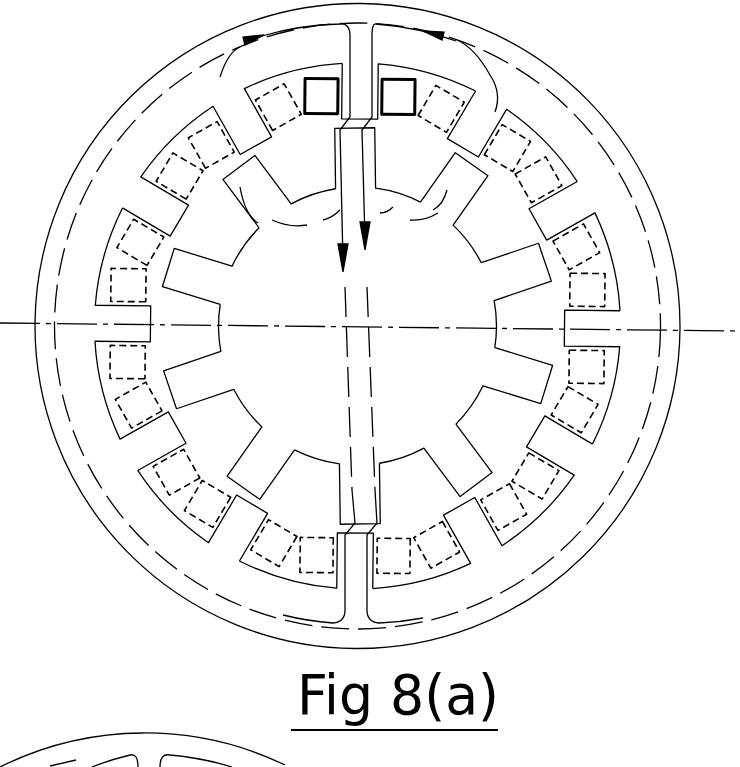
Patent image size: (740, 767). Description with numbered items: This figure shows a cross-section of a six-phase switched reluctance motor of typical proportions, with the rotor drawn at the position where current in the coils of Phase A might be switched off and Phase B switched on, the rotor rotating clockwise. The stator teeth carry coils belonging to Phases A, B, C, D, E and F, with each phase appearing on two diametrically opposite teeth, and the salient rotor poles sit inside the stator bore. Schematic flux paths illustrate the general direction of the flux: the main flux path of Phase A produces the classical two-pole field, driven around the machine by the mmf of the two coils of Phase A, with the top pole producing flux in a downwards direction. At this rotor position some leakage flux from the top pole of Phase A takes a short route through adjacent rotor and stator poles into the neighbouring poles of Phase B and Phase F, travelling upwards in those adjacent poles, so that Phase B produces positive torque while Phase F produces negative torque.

The Phase A is at (357, 325).
The Phase B is at (357, 326).
The Phase C is at (357, 325).
The Phase D is at (357, 325).
The Phase E is at (357, 325).
The Phase F is at (357, 326).